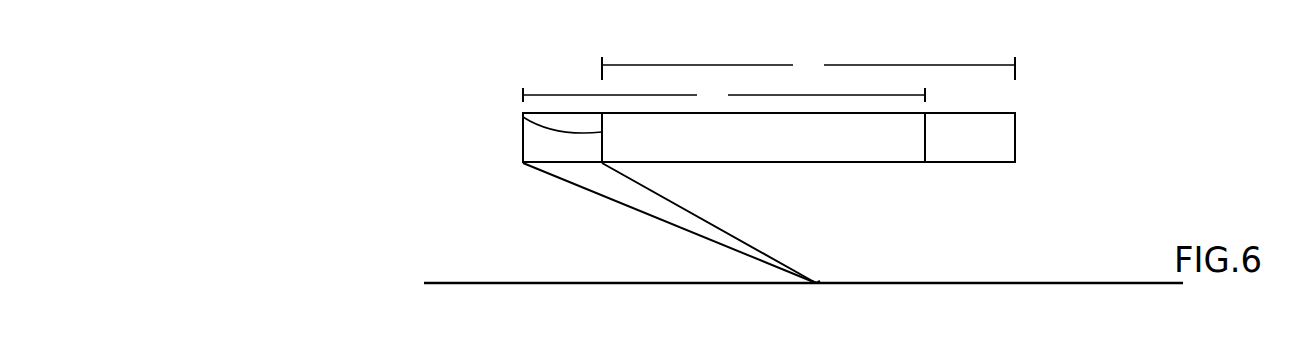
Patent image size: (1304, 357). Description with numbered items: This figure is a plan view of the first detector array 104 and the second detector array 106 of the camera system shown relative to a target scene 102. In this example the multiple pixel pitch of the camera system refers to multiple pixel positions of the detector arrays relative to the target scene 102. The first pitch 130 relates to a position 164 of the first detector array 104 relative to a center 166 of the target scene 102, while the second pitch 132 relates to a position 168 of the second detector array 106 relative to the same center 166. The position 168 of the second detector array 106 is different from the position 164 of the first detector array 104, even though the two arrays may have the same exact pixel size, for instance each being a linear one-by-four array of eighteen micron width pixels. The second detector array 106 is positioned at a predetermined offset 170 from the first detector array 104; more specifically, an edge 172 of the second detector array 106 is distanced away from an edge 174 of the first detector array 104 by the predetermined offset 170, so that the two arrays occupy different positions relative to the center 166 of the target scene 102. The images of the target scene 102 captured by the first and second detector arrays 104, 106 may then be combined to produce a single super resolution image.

The target scene 102 is at (964, 274).
The first detector array 104 is at (724, 95).
The second detector array 106 is at (808, 67).
The first pitch 130 is at (507, 85).
The second pitch 132 is at (589, 60).
The position of the first detector array 164 is at (632, 209).
The center of the target scene 166 is at (817, 282).
The position of the second detector array 168 is at (695, 212).
The predetermined offset 170 is at (565, 162).
The edge of the second detector array 172 is at (523, 117).
The edge of the first detector array 174 is at (523, 153).